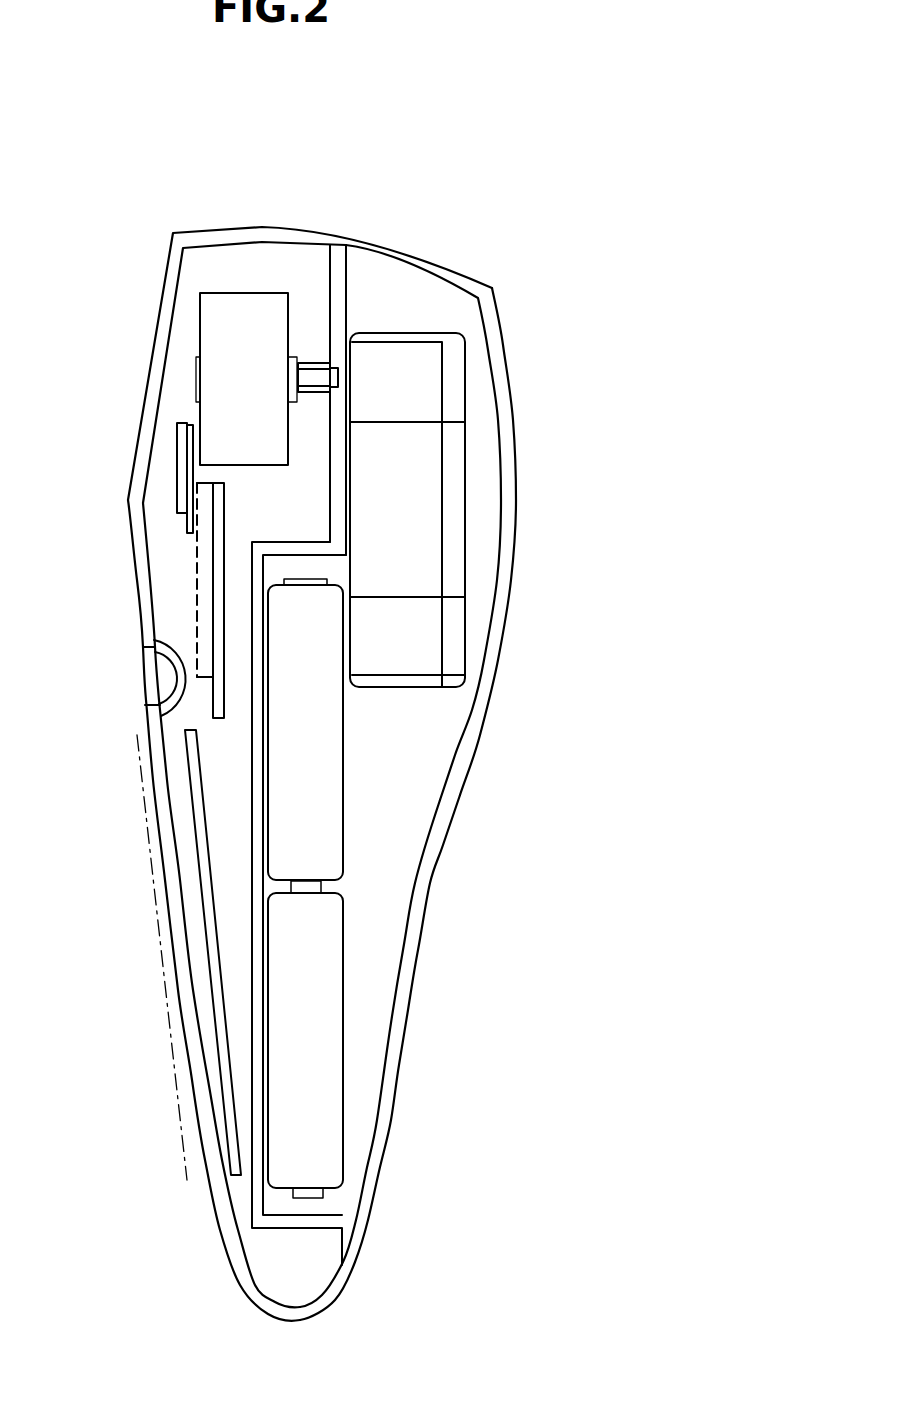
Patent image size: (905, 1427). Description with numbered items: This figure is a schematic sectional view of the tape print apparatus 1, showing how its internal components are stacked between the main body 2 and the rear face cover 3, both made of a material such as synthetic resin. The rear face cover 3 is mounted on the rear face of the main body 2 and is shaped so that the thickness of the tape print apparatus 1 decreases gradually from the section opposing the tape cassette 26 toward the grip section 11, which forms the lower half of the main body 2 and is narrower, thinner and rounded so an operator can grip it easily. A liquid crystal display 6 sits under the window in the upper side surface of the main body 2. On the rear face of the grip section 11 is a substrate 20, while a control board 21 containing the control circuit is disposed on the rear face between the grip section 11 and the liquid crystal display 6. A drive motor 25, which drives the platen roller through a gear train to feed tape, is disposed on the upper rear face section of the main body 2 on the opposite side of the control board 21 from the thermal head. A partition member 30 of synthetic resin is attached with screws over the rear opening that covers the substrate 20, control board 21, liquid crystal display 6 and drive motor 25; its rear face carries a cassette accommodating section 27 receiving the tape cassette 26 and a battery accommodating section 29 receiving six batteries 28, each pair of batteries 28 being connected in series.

The tape print apparatus 1 is at (440, 218).
The main body 2 is at (207, 237).
The rear face cover 3 is at (493, 345).
The liquid crystal display 6 is at (187, 462).
The grip section 11 is at (500, 760).
The substrate 20 is at (228, 1097).
The control board 21 is at (218, 598).
The drive motor 25 is at (260, 320).
The tape cassette 26 is at (382, 517).
The cassette accommodating section 27 is at (415, 315).
The batteries 28 is at (284, 748).
The battery accommodating section 29 is at (283, 1217).
The partition member 30 is at (340, 292).